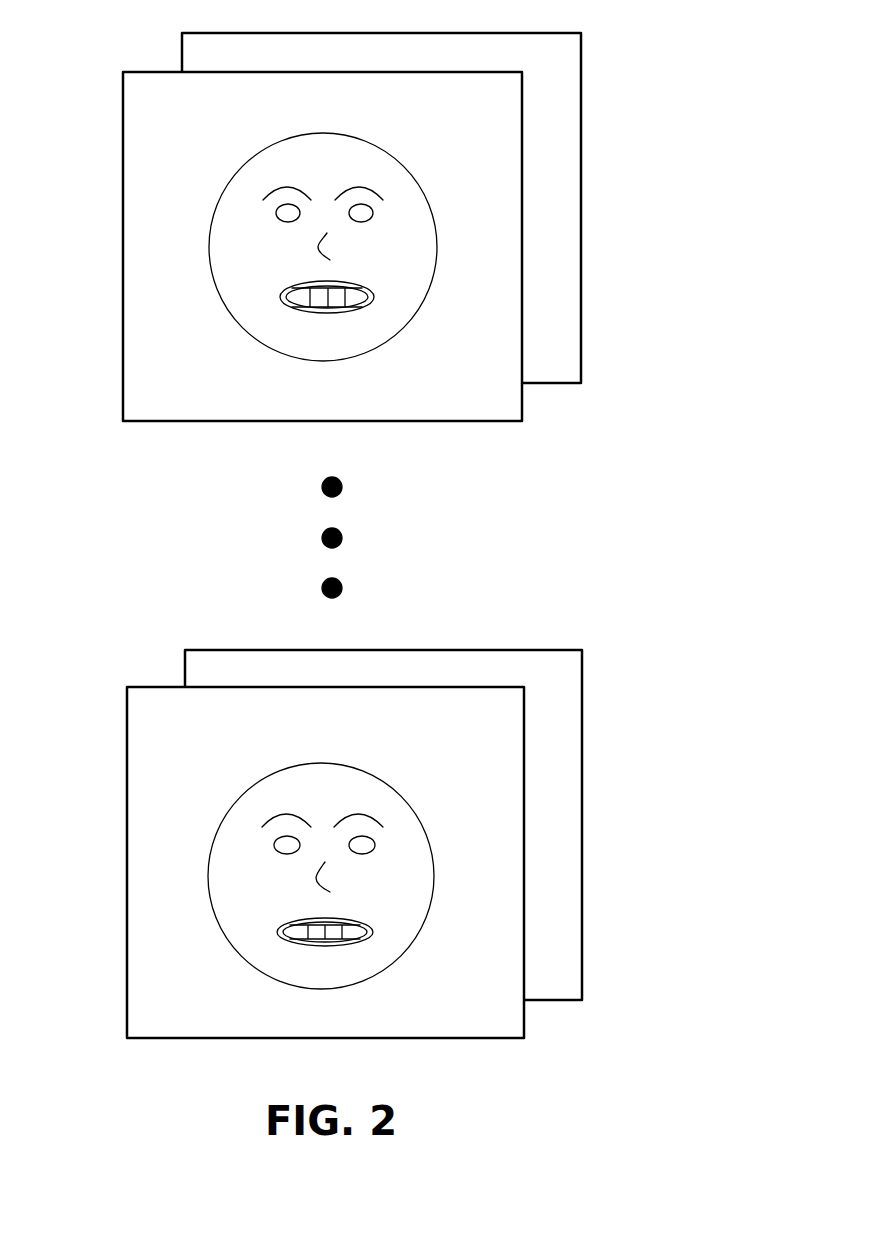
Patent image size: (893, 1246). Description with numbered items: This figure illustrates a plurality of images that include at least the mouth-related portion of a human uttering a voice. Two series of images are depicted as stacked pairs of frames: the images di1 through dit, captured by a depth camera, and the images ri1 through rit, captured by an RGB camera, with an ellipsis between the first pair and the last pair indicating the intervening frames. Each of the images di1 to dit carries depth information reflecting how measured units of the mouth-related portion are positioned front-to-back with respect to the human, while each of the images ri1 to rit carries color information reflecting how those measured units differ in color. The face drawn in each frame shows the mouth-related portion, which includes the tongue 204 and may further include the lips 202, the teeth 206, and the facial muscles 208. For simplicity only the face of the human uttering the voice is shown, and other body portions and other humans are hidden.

The lips 202 is at (373, 294).
The tongue 204 is at (310, 296).
The teeth 206 is at (333, 286).
The facial muscles 208 is at (314, 254).
The image ri1 is at (196, 43).
The image di1 is at (138, 133).
The image rit is at (200, 660).
The image dit is at (142, 717).